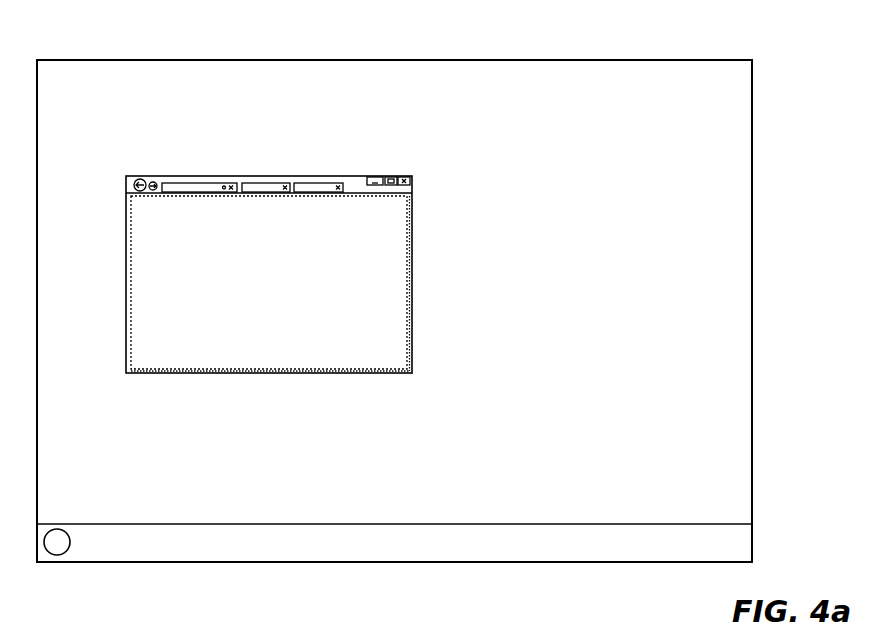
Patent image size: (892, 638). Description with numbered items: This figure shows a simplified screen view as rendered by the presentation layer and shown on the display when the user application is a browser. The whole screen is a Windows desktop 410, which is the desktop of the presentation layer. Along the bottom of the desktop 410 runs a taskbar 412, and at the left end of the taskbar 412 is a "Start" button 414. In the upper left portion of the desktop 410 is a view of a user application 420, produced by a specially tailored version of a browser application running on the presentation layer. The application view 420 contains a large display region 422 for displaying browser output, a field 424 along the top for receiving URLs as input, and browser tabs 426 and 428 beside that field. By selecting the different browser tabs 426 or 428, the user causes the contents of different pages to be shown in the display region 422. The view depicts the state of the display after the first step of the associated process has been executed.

The Windows desktop 410 is at (679, 75).
The taskbar 412 is at (137, 547).
The Start button 414 is at (57, 552).
The user application view 420 is at (423, 228).
The display region 422 is at (398, 270).
The field for receiving URLs 424 is at (188, 188).
The browser tab 426 is at (259, 188).
The browser tab 428 is at (322, 188).